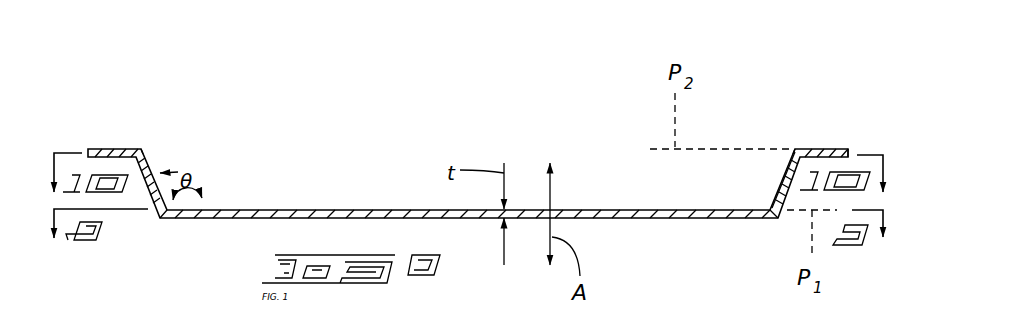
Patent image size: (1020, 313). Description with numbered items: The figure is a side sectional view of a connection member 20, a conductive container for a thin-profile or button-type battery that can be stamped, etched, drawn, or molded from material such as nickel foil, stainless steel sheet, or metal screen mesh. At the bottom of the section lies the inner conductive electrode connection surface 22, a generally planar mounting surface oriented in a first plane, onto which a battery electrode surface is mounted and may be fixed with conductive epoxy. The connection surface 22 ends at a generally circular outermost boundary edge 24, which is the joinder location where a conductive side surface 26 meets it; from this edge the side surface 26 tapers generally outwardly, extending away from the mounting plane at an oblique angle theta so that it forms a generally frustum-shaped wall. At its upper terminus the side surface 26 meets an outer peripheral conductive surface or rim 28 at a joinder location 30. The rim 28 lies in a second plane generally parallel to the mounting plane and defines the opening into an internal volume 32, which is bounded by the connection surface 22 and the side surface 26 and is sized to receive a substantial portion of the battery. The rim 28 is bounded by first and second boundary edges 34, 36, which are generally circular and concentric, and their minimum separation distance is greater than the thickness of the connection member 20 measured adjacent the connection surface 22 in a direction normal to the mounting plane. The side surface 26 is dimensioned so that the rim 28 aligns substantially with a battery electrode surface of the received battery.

The connection member 20 is at (214, 57).
The inner conductive electrode connection surface 22 is at (350, 208).
The outermost boundary edge 24 is at (190, 218).
The side surface 26 is at (151, 166).
The outer peripheral conductive surface or rim 28 is at (112, 148).
The joinder location 30 is at (144, 146).
The internal volume 32 is at (548, 94).
The first boundary edge 34 is at (803, 148).
The second boundary edge 36 is at (858, 150).